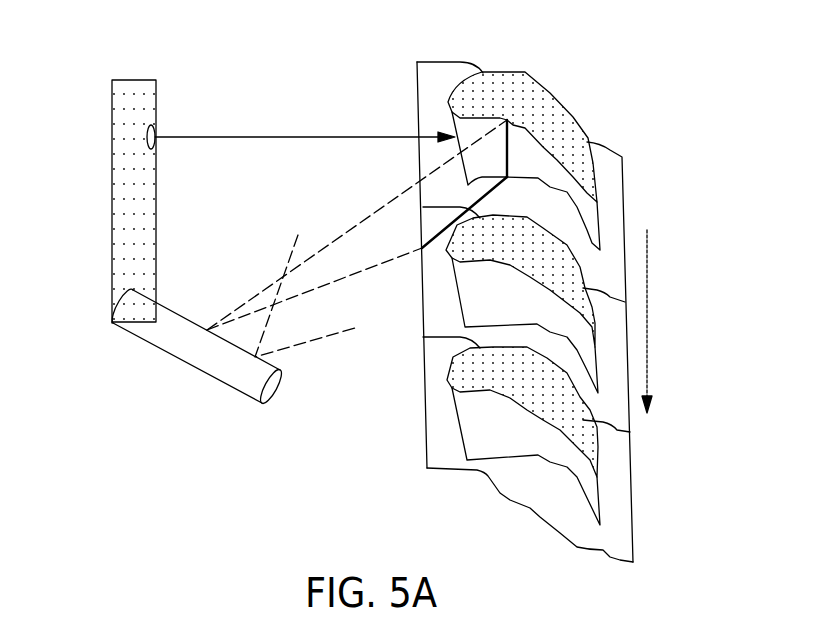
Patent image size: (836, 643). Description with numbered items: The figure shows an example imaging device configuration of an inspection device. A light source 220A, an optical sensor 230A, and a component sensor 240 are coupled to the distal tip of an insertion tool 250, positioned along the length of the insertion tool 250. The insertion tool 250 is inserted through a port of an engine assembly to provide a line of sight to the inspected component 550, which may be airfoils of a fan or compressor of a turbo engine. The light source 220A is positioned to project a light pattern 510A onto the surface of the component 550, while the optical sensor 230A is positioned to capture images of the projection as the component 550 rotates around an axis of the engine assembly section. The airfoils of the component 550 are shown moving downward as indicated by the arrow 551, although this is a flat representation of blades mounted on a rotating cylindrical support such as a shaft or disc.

The light source 220A is at (212, 330).
The optical sensor 230A is at (278, 390).
The component sensor 240 is at (146, 137).
The insertion tool 250 is at (112, 230).
The light pattern 510A is at (531, 305).
The inspected component 550 is at (580, 123).
The arrow 551 is at (693, 321).